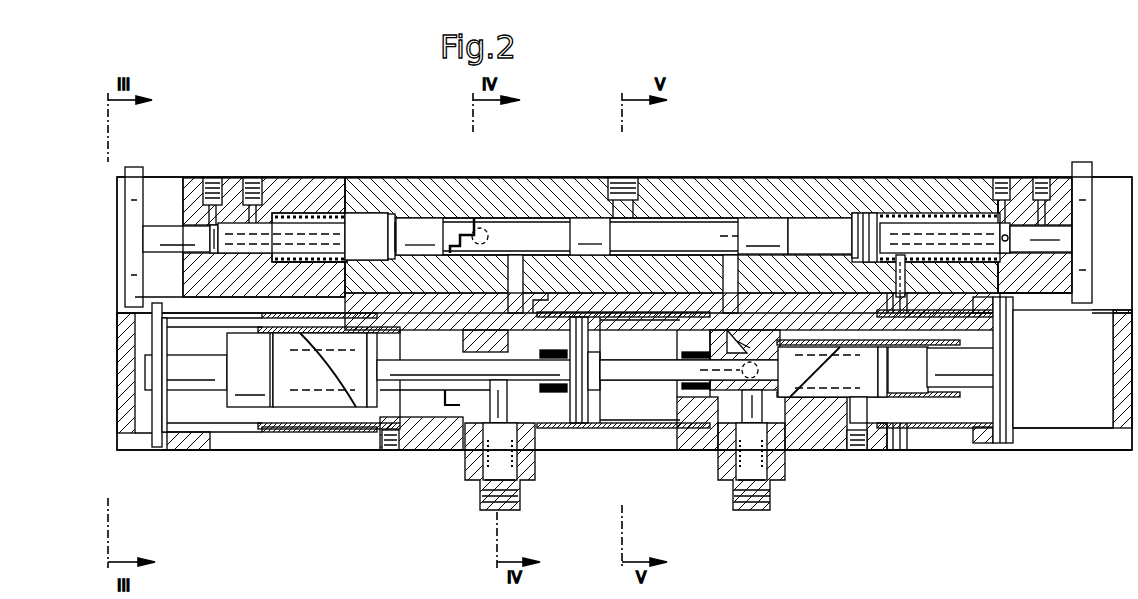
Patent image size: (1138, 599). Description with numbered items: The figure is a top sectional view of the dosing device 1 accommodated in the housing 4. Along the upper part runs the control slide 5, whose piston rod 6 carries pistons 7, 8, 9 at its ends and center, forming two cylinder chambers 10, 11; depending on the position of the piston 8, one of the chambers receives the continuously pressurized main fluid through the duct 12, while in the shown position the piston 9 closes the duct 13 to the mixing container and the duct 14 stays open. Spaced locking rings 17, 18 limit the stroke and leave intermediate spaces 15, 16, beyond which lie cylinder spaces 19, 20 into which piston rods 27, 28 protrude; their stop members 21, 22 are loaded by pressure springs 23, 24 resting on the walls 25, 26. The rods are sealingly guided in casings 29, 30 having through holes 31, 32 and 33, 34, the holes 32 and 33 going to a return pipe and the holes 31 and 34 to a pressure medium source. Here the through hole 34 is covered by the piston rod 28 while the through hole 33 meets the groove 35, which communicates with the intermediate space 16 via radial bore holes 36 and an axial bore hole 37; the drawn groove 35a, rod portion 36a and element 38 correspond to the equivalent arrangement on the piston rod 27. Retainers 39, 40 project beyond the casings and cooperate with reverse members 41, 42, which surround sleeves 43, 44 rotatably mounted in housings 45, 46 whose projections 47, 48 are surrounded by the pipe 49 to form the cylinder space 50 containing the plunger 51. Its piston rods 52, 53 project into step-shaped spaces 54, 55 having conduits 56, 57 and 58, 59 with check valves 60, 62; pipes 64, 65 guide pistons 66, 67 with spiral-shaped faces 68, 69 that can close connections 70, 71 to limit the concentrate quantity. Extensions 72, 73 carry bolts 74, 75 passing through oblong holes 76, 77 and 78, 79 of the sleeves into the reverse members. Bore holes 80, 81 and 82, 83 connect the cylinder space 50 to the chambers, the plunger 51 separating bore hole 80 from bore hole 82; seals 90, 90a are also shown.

The dosing device 1 is at (737, 155).
The housing 4 is at (758, 178).
The control slide 5 is at (649, 218).
The piston rod 6 is at (502, 218).
The piston 7 is at (423, 218).
The piston 8 is at (590, 218).
The piston 9 is at (774, 218).
The cylinder chamber 10 is at (543, 220).
The cylinder chamber 11 is at (690, 218).
The duct 12 is at (618, 178).
The duct 13 is at (728, 236).
The duct 14 is at (490, 238).
The intermediate space 15 is at (390, 215).
The intermediate space 16 is at (854, 213).
The locking ring 17 is at (848, 228).
The locking ring 18 is at (398, 219).
The cylinder space 19 is at (294, 214).
The cylinder space 20 is at (884, 216).
The stop member 21 is at (337, 212).
The stop member 22 is at (870, 213).
The pressure spring 23 is at (312, 215).
The pressure spring 24 is at (910, 216).
The wall 25 is at (280, 260).
The wall 26 is at (980, 258).
The piston rod 27 is at (272, 220).
The piston rod 28 is at (934, 226).
The casing 29 is at (184, 191).
The casing 30 is at (1064, 178).
The through hole 31 is at (211, 178).
The through hole 32 is at (247, 178).
The through hole 33 is at (1000, 178).
The through hole 34 is at (1040, 178).
The groove 35 is at (1002, 226).
The stop 35a is at (208, 224).
The radial bore hole 36 is at (1010, 238).
The rod 36a is at (208, 238).
The axial bore hole 37 is at (895, 266).
The piston 38 is at (330, 241).
The retainer 39 is at (135, 167).
The retainer 40 is at (1084, 164).
The reverse member 41 is at (157, 440).
The reverse member 42 is at (1013, 442).
The sleeve 43 is at (310, 430).
The sleeve 44 is at (951, 428).
The housing 45 is at (440, 443).
The housing 46 is at (903, 449).
The projection 47 is at (586, 422).
The projection 48 is at (702, 422).
The pipe 49 is at (652, 428).
The cylinder space 50 is at (676, 424).
The plunger 51 is at (602, 428).
The piston rod 52 is at (590, 380).
The piston rod 53 is at (624, 424).
The step-shaped space 54 is at (515, 400).
The step-shaped space 55 is at (743, 340).
The conduit 56 is at (478, 389).
The conduit 57 is at (465, 365).
The conduit 58 is at (762, 399).
The conduit 59 is at (715, 370).
The check valve 60 is at (478, 498).
The check valve 62 is at (724, 494).
The pipe 64 is at (422, 422).
The pipe 65 is at (820, 400).
The piston 66 is at (276, 412).
The piston 67 is at (855, 421).
The spiral-shaped face 68 is at (338, 370).
The spiral-shaped face 69 is at (808, 370).
The connection 70 is at (390, 450).
The connection 71 is at (862, 448).
The extension 72 is at (191, 382).
The extension 73 is at (1013, 360).
The bolt 74 is at (170, 432).
The bolt 75 is at (1013, 402).
The oblong hole 76 is at (212, 434).
The oblong hole 77 is at (199, 320).
The oblong hole 78 is at (1082, 428).
The oblong hole 79 is at (1100, 310).
The bore hole 80 is at (540, 307).
The bore hole 81 is at (508, 272).
The bore hole 82 is at (678, 342).
The bore hole 83 is at (723, 270).
The seal 90 is at (688, 391).
The seal 90a is at (568, 383).